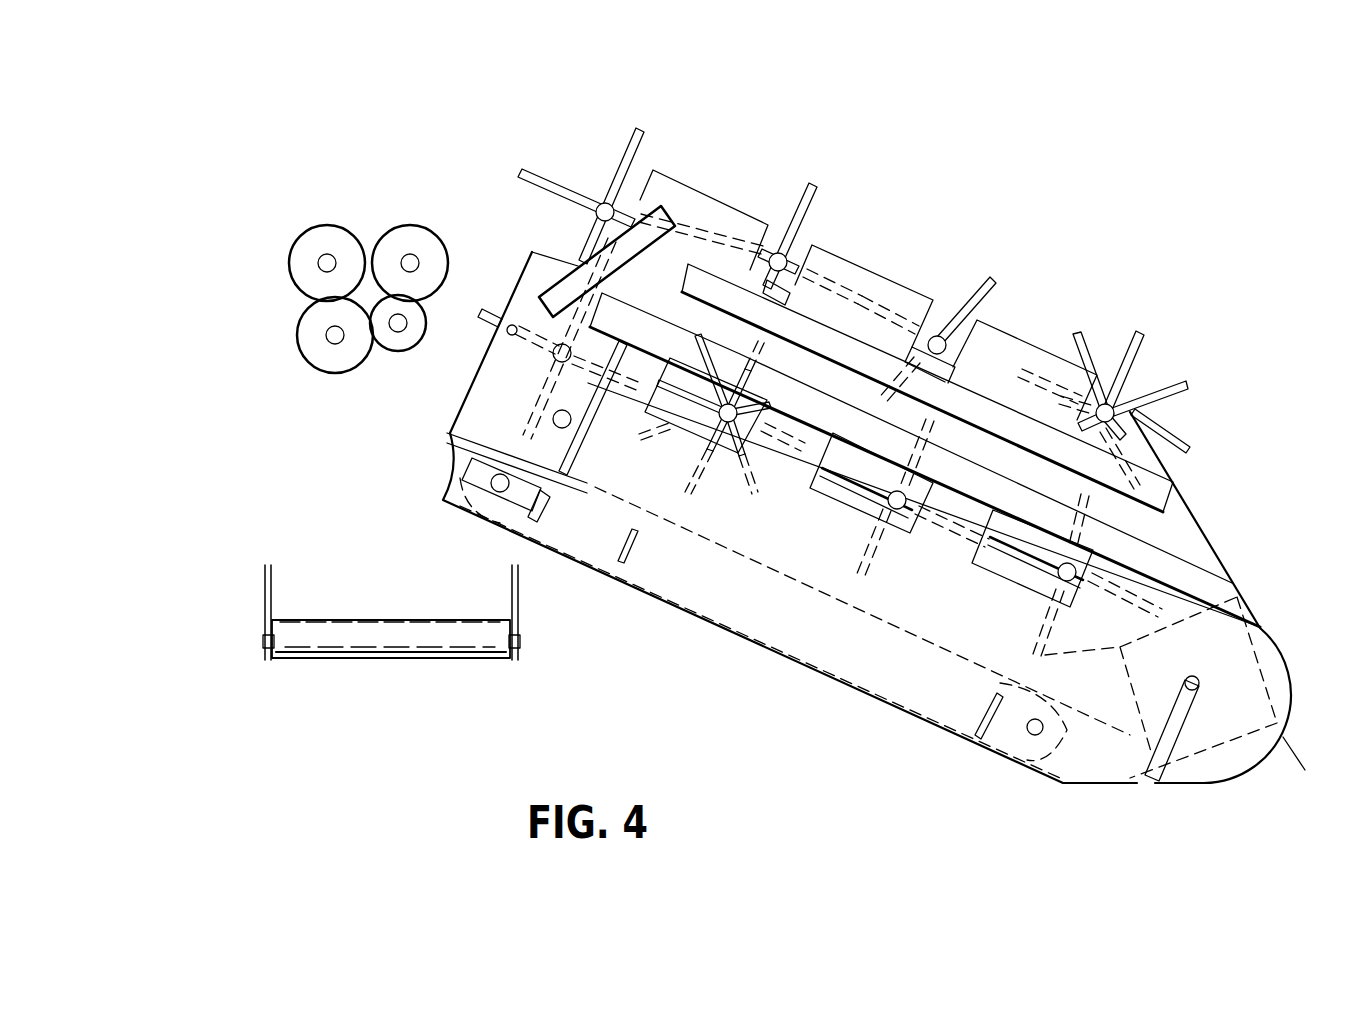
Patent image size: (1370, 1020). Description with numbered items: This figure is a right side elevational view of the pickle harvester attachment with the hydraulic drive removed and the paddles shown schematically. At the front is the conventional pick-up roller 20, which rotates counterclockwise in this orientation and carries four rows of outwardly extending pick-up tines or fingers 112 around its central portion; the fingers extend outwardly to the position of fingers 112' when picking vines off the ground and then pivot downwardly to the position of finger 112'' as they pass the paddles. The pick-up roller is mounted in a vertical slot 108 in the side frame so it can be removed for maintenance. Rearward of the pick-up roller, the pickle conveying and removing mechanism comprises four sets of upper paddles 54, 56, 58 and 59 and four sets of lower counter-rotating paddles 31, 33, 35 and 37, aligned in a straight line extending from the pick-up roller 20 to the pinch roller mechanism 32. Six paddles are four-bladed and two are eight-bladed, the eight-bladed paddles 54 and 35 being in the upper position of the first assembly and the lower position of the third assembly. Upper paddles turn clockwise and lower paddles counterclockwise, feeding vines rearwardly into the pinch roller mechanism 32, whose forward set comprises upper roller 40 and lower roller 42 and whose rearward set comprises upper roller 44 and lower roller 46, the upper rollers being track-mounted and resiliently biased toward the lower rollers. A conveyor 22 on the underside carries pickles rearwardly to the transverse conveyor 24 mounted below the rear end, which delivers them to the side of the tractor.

The pick-up roller 20 is at (1277, 655).
The conveyor 22 is at (890, 630).
The transverse conveyor 24 is at (379, 658).
The lower paddle 31 is at (1037, 648).
The pinch roller mechanism 32 is at (306, 218).
The lower paddle 33 is at (878, 553).
The lower paddle 35 is at (720, 490).
The lower paddle 37 is at (533, 402).
The upper roller 40 is at (417, 235).
The lower roller 42 is at (402, 347).
The upper roller 44 is at (300, 278).
The lower roller 46 is at (308, 345).
The upper paddle 54 is at (1140, 350).
The upper paddle 56 is at (990, 293).
The upper paddle 58 is at (803, 222).
The upper paddle 59 is at (643, 143).
The vertical slot 108 is at (1157, 780).
The pick-up tines or fingers 112 is at (969, 460).
The fingers in extended position 112' is at (1326, 729).
The finger in pivoted-down position 112'' is at (1022, 445).